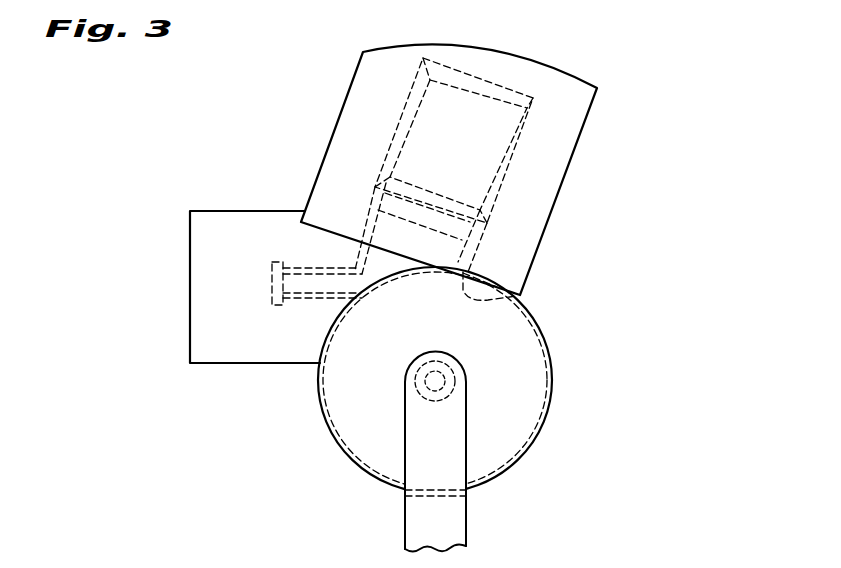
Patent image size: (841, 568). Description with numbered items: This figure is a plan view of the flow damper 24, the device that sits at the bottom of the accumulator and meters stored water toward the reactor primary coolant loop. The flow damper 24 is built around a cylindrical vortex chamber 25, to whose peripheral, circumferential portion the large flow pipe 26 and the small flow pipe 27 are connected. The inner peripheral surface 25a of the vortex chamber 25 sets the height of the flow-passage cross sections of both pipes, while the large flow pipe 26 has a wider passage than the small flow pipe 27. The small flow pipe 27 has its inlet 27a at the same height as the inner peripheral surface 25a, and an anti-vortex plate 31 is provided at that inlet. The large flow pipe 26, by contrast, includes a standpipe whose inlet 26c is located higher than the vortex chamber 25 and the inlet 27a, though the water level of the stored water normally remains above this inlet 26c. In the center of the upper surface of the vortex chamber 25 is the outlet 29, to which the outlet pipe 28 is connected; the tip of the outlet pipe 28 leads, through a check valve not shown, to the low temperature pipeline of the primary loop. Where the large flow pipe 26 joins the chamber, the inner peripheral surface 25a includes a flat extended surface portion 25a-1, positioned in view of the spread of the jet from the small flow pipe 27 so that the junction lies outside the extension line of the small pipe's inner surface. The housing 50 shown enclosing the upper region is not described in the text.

The flow damper 24 is at (280, 163).
The housing 50 is at (584, 126).
The large flow pipe 26 is at (482, 245).
The inlet of the large flow pipe 26c is at (476, 170).
The small flow pipe 27 is at (308, 268).
The inlet of the small flow pipe 27a is at (270, 290).
The anti-vortex plate 31 is at (190, 338).
The vortex chamber 25 is at (550, 404).
The inner peripheral surface of the vortex chamber 25a is at (538, 355).
The extended surface portion 25a-1 is at (517, 300).
The outlet pipe 28 is at (466, 524).
The outlet 29 is at (466, 392).